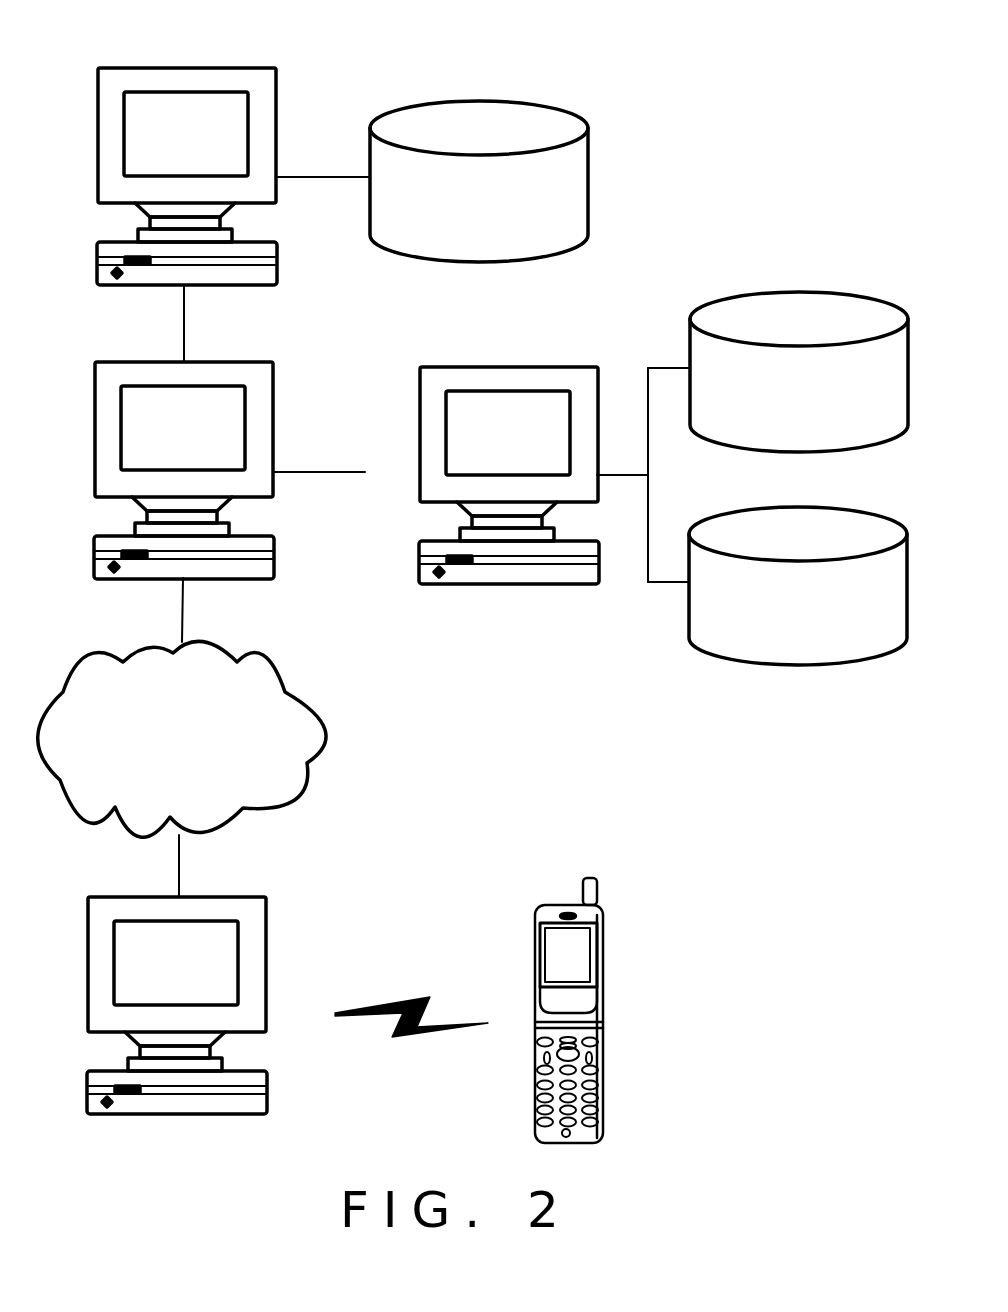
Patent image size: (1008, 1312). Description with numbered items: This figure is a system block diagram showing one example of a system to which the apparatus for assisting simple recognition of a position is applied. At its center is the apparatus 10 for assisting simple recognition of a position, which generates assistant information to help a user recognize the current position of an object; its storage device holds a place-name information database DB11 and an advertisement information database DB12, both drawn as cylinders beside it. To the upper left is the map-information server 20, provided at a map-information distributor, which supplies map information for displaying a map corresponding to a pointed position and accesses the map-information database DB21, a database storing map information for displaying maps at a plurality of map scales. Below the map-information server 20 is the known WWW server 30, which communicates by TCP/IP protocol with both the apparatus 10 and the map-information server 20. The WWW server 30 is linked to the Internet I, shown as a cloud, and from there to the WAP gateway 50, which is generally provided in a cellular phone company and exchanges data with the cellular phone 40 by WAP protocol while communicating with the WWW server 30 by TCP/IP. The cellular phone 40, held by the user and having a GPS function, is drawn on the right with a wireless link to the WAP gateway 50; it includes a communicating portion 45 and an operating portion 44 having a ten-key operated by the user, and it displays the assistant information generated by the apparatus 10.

The map-information server 20 is at (252, 53).
The map-information database DB21 is at (427, 100).
The WWW server 30 is at (249, 348).
The apparatus for assisting simple recognition of a position 10 is at (524, 344).
The place-name information database DB11 is at (752, 292).
The advertisement information database DB12 is at (750, 507).
The Internet I is at (282, 663).
The WAP gateway 50 is at (242, 881).
The cellular phone 40 is at (611, 876).
The communicating portion 45 is at (610, 922).
The operating portion 44 is at (610, 1030).